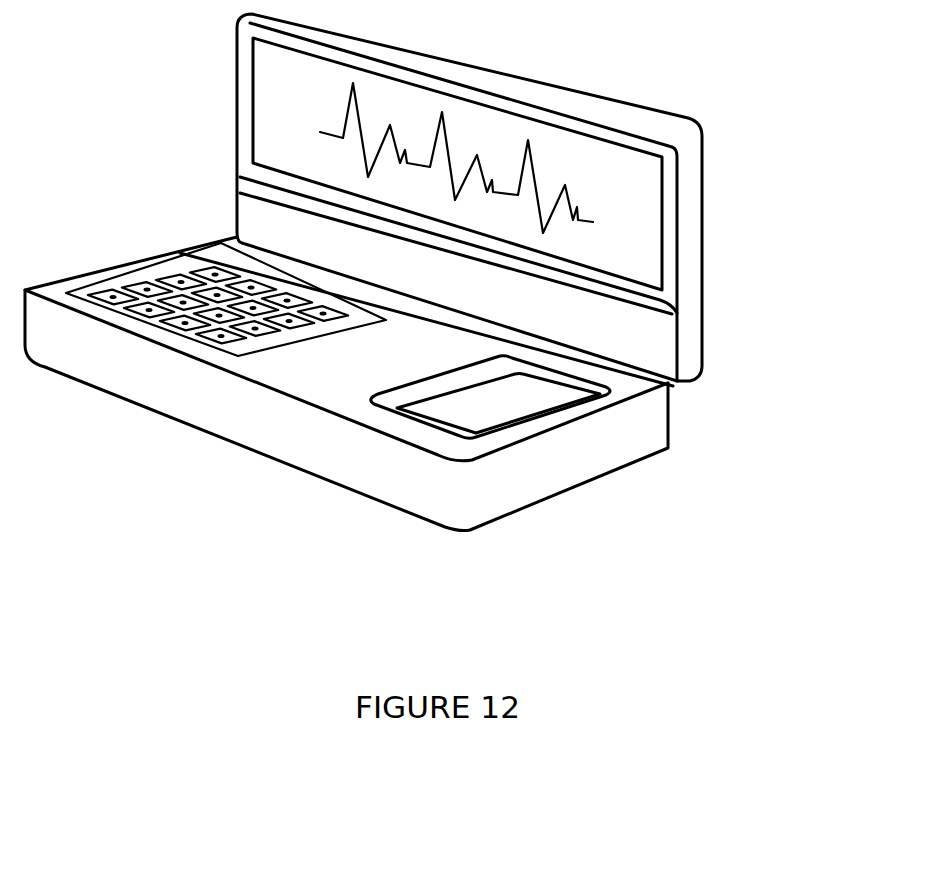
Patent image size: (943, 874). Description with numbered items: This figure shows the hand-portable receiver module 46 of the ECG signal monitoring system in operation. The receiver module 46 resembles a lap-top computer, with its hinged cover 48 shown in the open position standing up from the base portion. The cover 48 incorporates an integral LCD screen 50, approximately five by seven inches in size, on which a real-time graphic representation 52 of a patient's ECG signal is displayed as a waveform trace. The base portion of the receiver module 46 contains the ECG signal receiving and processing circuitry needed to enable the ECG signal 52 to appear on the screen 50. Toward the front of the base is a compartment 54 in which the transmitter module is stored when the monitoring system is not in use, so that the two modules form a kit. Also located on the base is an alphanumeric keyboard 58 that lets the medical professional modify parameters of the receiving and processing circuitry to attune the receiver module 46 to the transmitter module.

The receiver module 46 is at (443, 272).
The hinged cover 48 is at (685, 330).
The LCD screen 50 is at (285, 105).
The real-time graphic representation of ECG signal 52 is at (567, 198).
The compartment 54 is at (517, 398).
The alphanumeric keyboard 58 is at (150, 290).